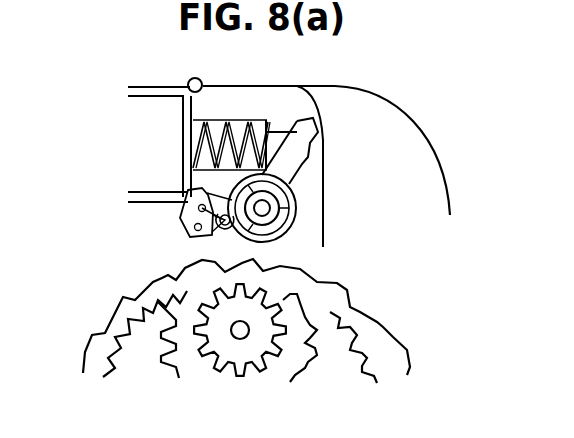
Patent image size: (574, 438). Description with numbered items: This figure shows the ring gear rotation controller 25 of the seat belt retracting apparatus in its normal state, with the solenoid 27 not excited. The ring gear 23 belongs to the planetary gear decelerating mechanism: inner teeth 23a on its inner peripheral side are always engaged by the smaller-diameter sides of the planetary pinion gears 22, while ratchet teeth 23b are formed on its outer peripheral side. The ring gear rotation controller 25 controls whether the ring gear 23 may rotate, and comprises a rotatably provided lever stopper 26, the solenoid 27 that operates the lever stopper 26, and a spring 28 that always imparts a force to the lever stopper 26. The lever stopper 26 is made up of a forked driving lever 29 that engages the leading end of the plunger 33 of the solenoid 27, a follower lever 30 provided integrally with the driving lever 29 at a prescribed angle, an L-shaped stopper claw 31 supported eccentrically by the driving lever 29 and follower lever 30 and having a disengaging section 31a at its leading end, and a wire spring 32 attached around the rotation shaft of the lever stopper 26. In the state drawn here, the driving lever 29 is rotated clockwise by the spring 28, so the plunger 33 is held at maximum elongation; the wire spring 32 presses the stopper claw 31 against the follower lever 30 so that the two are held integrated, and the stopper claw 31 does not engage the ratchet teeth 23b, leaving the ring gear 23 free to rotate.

The planetary pinion gear 22 is at (207, 350).
The ring gear 23 is at (383, 330).
The inner teeth 23a is at (350, 325).
The ratchet teeth 23b is at (347, 290).
The ring gear rotation controller 25 is at (261, 112).
The lever stopper 26 is at (294, 228).
The solenoid 27 is at (147, 110).
The spring 28 is at (297, 85).
The driving lever 29 is at (318, 142).
The follower lever 30 is at (130, 195).
The stopper claw 31 is at (188, 231).
The disengaging section 31a is at (183, 208).
The wire spring 32 is at (210, 234).
The plunger 33 is at (217, 115).